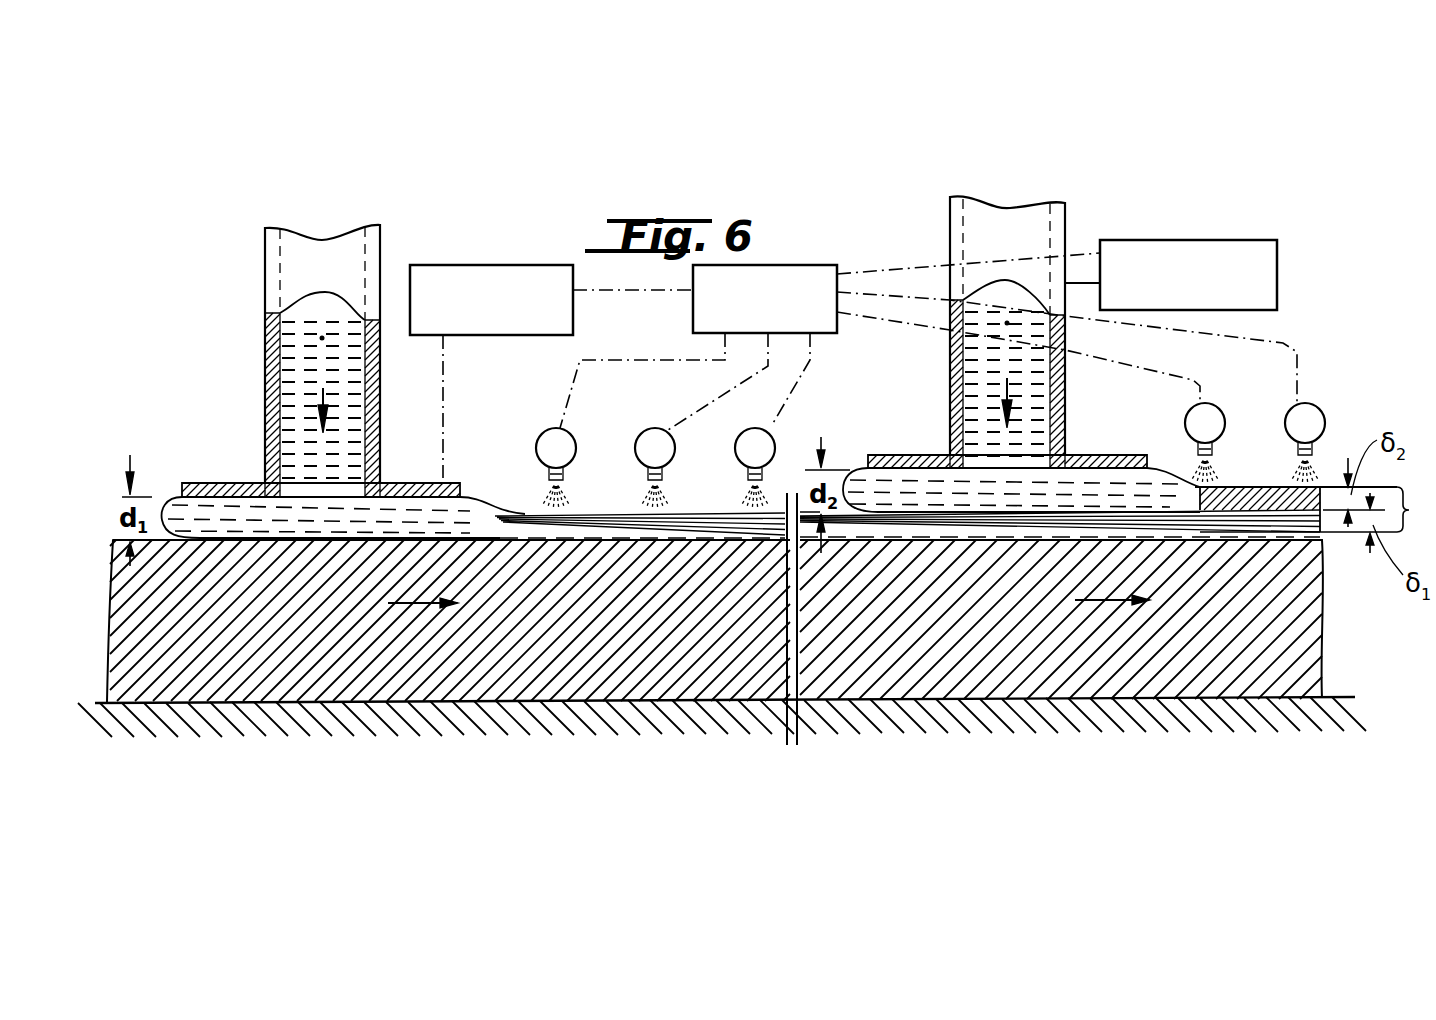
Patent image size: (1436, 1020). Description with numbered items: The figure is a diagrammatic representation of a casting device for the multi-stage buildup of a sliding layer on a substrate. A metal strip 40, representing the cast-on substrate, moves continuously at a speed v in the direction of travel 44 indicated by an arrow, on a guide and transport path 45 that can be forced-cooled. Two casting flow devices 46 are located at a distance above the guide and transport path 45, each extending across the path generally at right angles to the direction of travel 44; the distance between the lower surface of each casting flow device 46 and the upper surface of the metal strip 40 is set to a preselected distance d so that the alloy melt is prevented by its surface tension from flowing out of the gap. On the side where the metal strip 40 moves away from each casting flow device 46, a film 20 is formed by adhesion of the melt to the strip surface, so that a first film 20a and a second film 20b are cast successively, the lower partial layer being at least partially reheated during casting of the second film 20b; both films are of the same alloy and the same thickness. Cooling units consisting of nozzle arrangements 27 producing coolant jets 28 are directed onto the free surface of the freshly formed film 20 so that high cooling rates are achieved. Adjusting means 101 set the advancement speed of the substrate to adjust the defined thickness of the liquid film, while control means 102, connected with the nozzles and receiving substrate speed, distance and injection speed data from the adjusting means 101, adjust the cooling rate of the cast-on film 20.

The adjusting means 101 is at (490, 263).
The control means 102 is at (812, 263).
The casting flow device 46 is at (412, 412).
The nozzle arrangements 27 is at (750, 440).
The coolant jets 28 is at (547, 503).
The film 20 is at (1318, 509).
The first film 20a is at (598, 530).
The second film 20b is at (1242, 488).
The metal strip 40 is at (135, 620).
The direction of travel 44 is at (400, 607).
The guide and transport path 45 is at (428, 722).